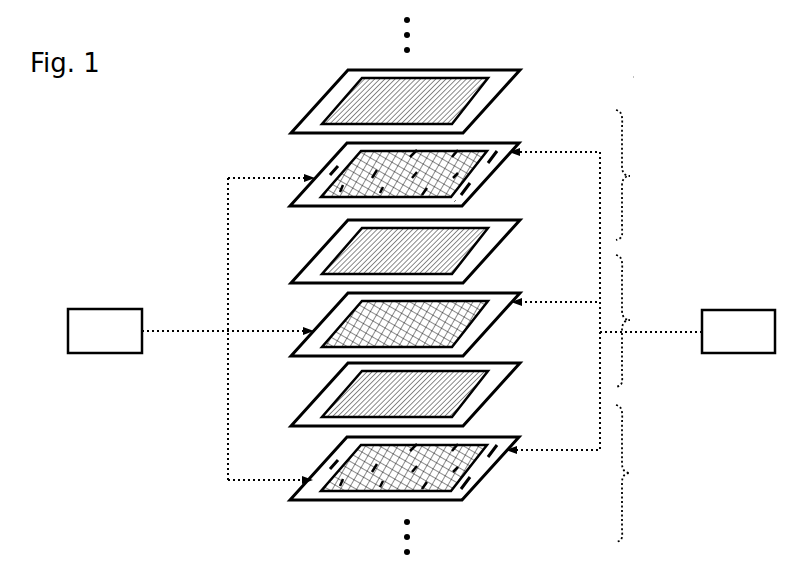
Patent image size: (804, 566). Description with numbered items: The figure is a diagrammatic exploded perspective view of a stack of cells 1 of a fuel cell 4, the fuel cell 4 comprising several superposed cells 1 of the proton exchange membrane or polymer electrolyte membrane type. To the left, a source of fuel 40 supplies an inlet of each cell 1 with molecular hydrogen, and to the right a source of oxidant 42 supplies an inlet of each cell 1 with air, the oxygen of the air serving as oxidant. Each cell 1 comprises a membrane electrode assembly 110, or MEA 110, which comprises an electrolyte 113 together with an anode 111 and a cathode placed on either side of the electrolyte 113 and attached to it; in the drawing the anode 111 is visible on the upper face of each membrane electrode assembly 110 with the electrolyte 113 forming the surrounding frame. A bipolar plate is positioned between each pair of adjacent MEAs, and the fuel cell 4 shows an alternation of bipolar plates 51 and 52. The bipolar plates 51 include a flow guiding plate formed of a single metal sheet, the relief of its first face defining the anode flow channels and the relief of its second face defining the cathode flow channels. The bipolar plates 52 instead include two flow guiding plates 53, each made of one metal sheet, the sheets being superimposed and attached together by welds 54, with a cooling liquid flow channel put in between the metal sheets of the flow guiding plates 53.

The cell 1 is at (635, 326).
The fuel cell 4 is at (633, 77).
The source of fuel 40 is at (93, 343).
The source of oxidant 42 is at (726, 343).
The bipolar plate 51 is at (492, 323).
The bipolar plate 52 is at (491, 175).
The flow guiding plate 53 is at (332, 160).
The weld 54 is at (456, 200).
The membrane electrode assembly 110 is at (493, 100).
The anode 111 is at (343, 100).
The electrolyte 113 is at (321, 101).